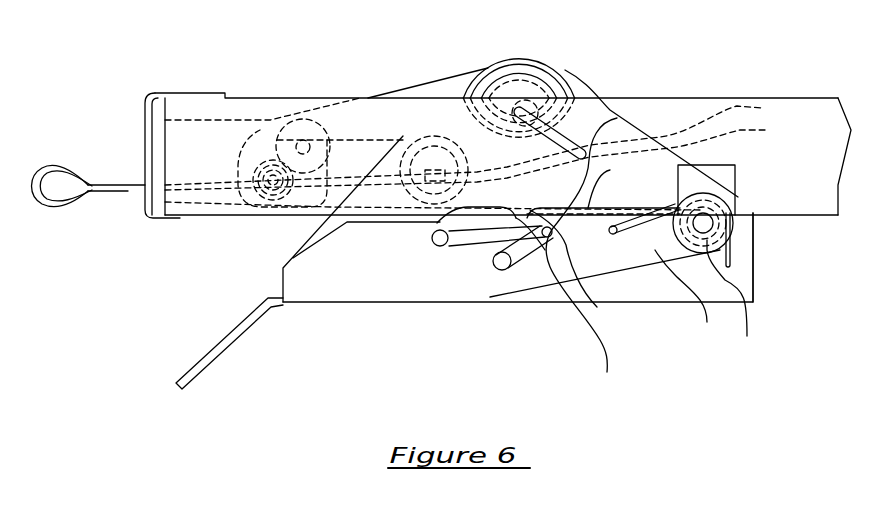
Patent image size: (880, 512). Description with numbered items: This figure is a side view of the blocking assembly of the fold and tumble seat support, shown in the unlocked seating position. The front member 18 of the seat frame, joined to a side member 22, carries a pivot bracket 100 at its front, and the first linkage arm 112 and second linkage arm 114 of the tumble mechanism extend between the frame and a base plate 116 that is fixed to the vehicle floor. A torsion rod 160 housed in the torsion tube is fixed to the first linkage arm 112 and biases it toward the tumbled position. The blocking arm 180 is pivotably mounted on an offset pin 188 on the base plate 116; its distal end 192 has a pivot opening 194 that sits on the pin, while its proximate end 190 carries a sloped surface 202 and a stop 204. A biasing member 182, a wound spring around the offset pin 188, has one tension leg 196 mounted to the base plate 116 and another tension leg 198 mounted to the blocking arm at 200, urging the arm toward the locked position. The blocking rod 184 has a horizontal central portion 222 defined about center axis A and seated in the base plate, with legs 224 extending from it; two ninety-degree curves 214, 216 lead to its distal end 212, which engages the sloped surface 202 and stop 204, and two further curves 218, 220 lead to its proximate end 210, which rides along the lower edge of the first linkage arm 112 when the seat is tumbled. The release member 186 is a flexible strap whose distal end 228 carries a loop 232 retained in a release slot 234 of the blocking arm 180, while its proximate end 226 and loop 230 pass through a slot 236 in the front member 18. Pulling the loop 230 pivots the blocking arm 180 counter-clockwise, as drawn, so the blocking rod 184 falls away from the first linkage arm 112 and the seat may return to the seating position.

The pivot bracket 100 is at (153, 98).
The side member 22 is at (227, 216).
The front member 18 is at (145, 112).
The slot 236 is at (143, 157).
The proximate end of release member 226 is at (88, 203).
The loop 230 is at (60, 210).
The second linkage arm 114 is at (262, 102).
The torsion rod 160 is at (562, 80).
The first linkage arm 112 is at (419, 95).
The release member 186 is at (680, 137).
The distal end of release member 228 is at (740, 106).
The loop 232 is at (742, 130).
The release slot 234 is at (713, 147).
The leg 224 is at (617, 117).
The 90° curve 218 is at (610, 170).
The blocking arm 180 is at (735, 173).
The biasing member 182 is at (737, 193).
The distal end of blocking arm 192 is at (743, 219).
The pivot opening 194 is at (738, 230).
The tension leg 196 is at (733, 253).
The base plate 116 is at (753, 278).
The offset pin 188 is at (736, 301).
The tension leg 198 is at (687, 297).
The blocking rod 184 is at (420, 228).
The sloped surface 202 is at (427, 223).
The proximate end of blocking rod 210 is at (437, 243).
The 90° curve 220 is at (440, 246).
The 90° curve 214 is at (493, 265).
The stop 204 is at (505, 315).
The proximate end of blocking arm 190 is at (533, 290).
The distal end of blocking rod 212 is at (518, 258).
The 90° curve 216 is at (572, 307).
The central portion 222 is at (600, 260).
The center axis A is at (600, 307).
The mounting point 200 is at (607, 236).